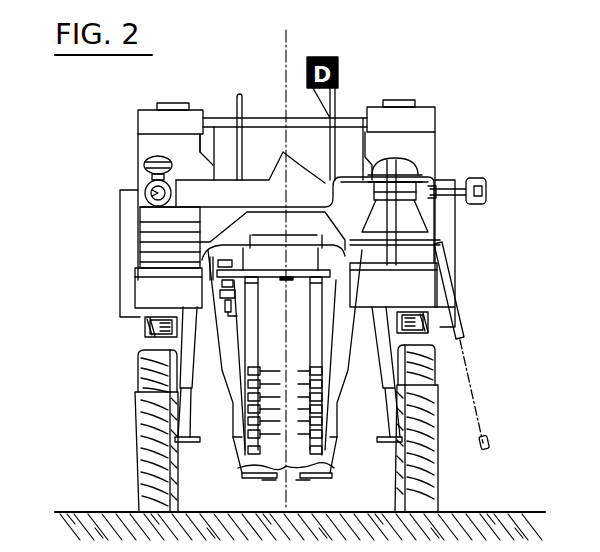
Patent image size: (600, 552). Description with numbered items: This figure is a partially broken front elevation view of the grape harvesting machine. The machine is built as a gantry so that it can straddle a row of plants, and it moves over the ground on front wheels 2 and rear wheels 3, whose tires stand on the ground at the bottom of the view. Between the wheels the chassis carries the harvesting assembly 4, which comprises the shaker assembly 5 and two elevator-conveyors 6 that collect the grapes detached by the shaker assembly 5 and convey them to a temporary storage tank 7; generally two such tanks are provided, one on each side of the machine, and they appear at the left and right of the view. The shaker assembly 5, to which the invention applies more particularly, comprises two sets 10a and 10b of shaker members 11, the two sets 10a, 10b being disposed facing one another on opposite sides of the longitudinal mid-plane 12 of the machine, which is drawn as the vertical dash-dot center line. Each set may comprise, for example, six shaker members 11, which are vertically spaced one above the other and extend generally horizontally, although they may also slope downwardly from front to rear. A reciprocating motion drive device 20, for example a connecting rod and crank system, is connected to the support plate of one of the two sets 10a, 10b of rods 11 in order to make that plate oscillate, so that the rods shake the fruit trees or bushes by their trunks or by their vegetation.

The front wheels 2 is at (137, 478).
The rear wheels 3 is at (140, 380).
The harvesting assembly 4 is at (222, 428).
The shaker assembly 5 is at (309, 311).
The elevator-conveyors 6 is at (306, 482).
The temporary storage tank 7 is at (120, 248).
The set of shaker members 10a is at (262, 437).
The set of shaker members 10b is at (308, 437).
The shaker members 11 is at (298, 357).
The longitudinal mid-plane 12 is at (285, 50).
The reciprocating motion drive device 20 is at (214, 295).